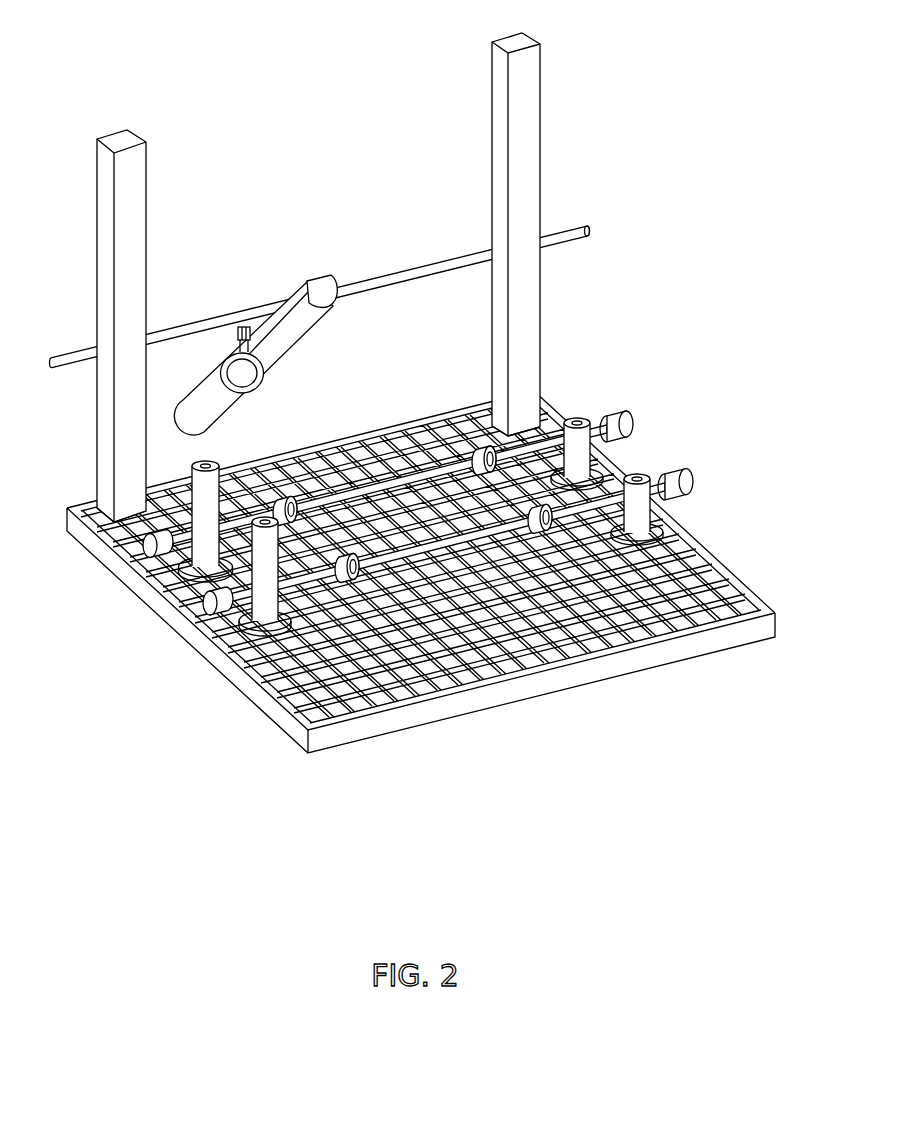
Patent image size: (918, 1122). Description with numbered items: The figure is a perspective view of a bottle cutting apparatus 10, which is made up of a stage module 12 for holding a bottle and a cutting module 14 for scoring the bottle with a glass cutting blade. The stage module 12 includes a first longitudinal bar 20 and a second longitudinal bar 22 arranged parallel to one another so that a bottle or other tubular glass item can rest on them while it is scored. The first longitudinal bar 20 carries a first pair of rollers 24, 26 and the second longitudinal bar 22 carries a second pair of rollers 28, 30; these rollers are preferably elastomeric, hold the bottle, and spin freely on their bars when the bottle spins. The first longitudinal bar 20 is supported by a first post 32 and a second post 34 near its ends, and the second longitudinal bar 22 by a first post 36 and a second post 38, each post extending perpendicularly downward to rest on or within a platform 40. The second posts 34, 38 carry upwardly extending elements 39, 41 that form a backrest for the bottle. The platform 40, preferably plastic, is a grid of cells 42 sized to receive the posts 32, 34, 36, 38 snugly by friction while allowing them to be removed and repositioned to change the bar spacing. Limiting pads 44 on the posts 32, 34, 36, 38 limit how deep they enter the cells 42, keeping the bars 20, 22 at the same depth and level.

The bottle cutting apparatus 10 is at (113, 88).
The stage module 12 is at (747, 697).
The cutting module 14 is at (303, 243).
The first longitudinal bar 20 is at (430, 477).
The second longitudinal bar 22 is at (470, 546).
The roller 24 is at (477, 450).
The roller 26 is at (284, 505).
The roller 28 is at (600, 550).
The roller 30 is at (438, 545).
The first post 32 is at (580, 443).
The second post 34 is at (160, 558).
The first post 36 is at (643, 508).
The second post 38 is at (240, 620).
The upwardly extending element 39 is at (262, 540).
The platform 40 is at (367, 720).
The upwardly extending element 41 is at (205, 480).
The cells 42 is at (310, 697).
The limiting pads 44 is at (597, 469).